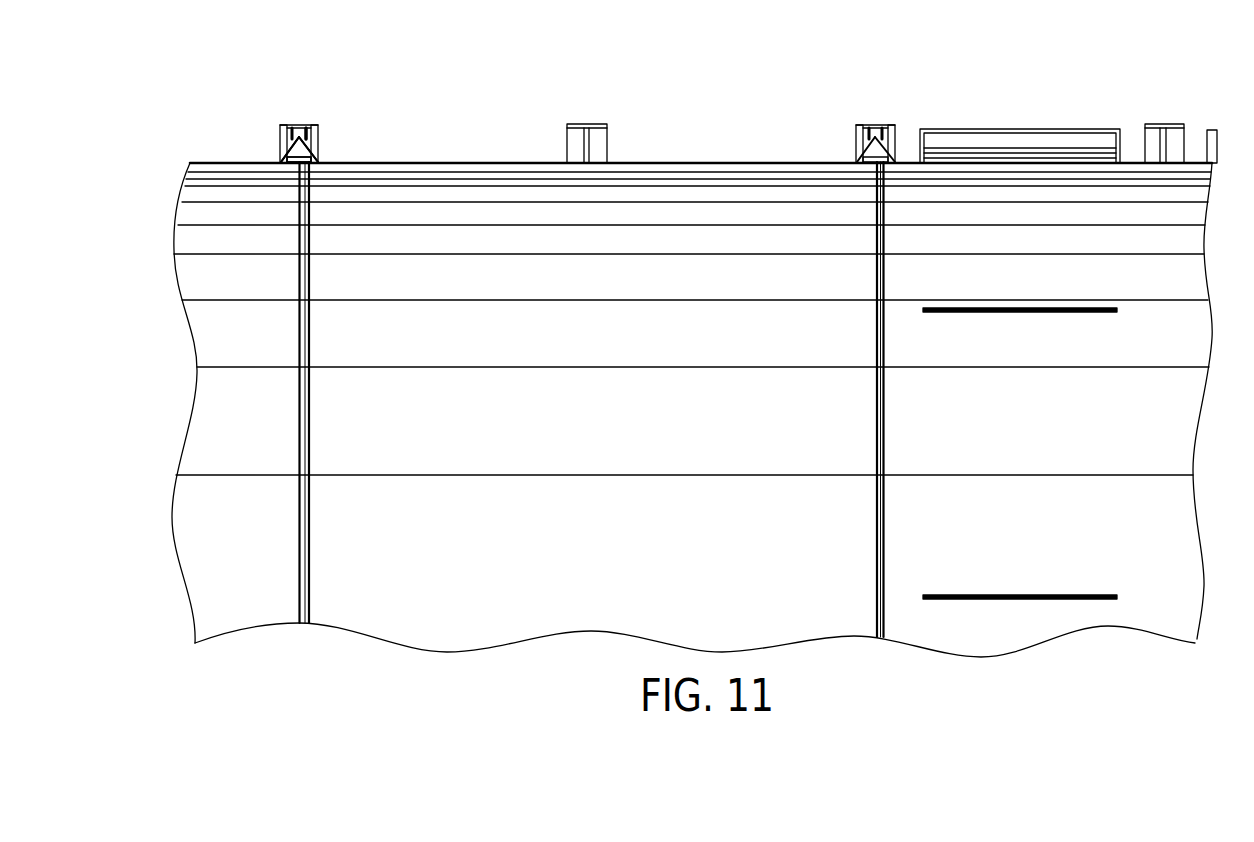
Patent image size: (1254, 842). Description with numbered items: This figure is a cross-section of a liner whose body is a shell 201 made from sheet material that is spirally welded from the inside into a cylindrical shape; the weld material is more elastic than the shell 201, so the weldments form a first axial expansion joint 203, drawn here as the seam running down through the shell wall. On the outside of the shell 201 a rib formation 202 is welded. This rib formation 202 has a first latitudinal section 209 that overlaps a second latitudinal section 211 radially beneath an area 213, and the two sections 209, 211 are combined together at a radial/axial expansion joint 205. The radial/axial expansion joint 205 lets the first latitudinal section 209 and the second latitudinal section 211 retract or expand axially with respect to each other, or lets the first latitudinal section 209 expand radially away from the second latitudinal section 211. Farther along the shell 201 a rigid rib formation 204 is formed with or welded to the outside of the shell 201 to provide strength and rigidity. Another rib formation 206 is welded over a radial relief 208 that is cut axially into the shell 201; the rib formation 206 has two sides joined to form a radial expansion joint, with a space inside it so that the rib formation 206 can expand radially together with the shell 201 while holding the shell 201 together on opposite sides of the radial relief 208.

The shell 201 is at (398, 175).
The rib formation 202 is at (296, 124).
The first axial expansion joint 203 is at (302, 303).
The rigid rib formation 204 is at (594, 124).
The radial/axial expansion joint 205 is at (304, 138).
The rib formation 206 is at (971, 140).
The radial relief 208 is at (966, 312).
The first latitudinal section 209 is at (310, 162).
The second latitudinal section 211 is at (283, 163).
The area 213 is at (298, 146).